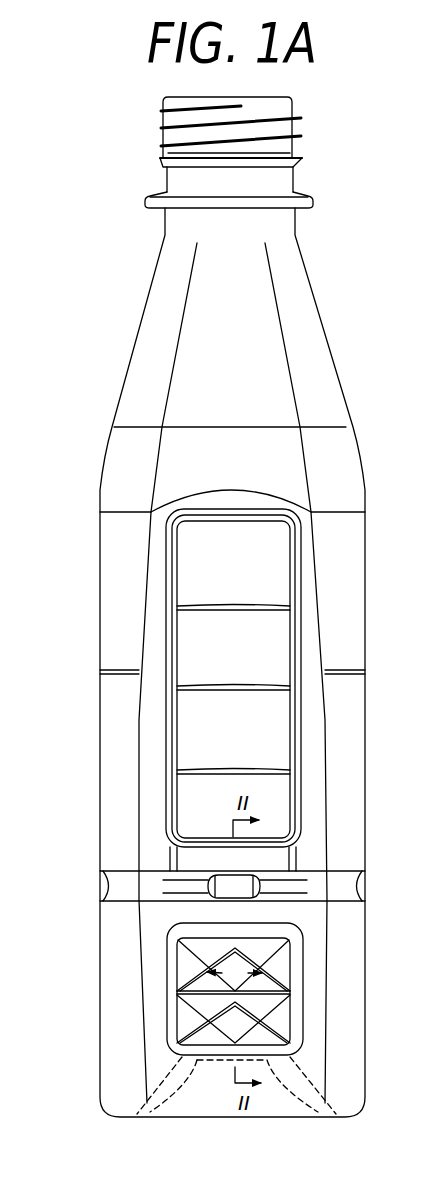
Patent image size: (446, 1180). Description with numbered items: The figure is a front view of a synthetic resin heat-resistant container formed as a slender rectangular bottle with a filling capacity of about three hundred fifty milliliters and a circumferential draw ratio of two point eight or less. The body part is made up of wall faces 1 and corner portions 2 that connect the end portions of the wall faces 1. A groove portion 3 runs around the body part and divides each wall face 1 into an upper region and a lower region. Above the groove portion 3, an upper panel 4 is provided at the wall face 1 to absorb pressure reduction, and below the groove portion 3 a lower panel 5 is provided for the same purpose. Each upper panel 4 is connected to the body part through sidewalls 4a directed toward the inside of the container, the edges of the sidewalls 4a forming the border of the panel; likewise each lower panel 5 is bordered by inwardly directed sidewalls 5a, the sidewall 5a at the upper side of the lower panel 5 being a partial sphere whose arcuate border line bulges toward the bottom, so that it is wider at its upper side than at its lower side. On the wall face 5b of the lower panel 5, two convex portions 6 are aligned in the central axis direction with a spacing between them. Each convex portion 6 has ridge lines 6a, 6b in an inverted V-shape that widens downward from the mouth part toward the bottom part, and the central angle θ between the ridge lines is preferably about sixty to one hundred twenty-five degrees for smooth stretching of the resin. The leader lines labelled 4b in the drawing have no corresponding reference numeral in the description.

The wall face 1 is at (313, 623).
The corner portion 2 is at (127, 785).
The groove portion 3 is at (99, 890).
The upper panel 4 is at (205, 647).
The sidewall 4a is at (232, 513).
The panel reinforcing ribs 4b is at (245, 598).
The lower panel 5 is at (189, 1017).
The sidewall 5a is at (169, 975).
The wall face of the lower panel 5b is at (290, 950).
The convex portion 6 is at (281, 972).
The ridge line 6a is at (178, 947).
The ridge line 6b is at (190, 1013).